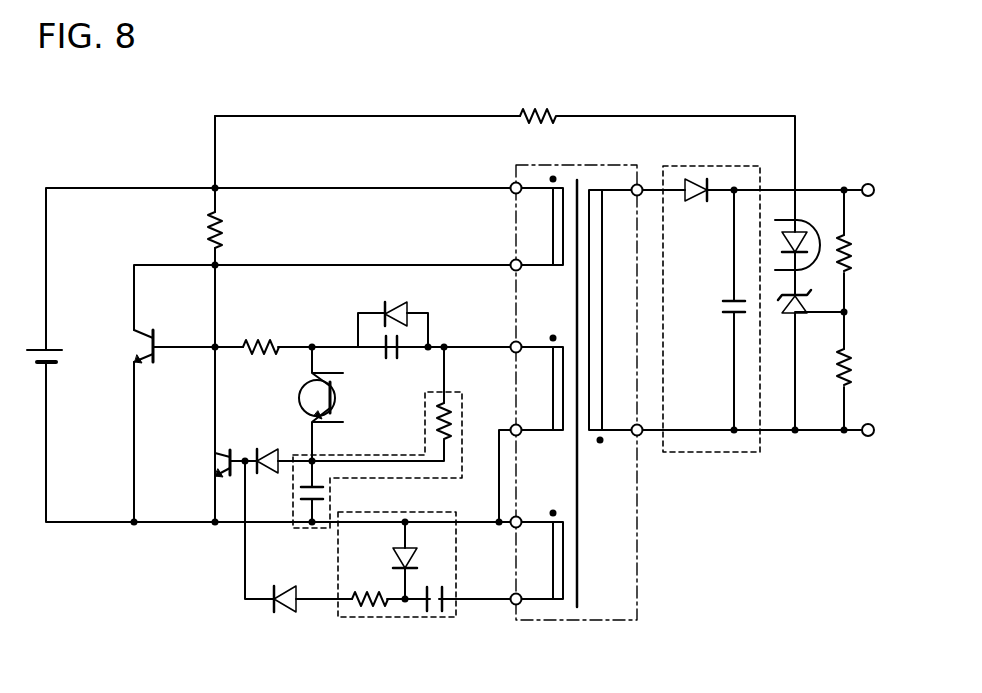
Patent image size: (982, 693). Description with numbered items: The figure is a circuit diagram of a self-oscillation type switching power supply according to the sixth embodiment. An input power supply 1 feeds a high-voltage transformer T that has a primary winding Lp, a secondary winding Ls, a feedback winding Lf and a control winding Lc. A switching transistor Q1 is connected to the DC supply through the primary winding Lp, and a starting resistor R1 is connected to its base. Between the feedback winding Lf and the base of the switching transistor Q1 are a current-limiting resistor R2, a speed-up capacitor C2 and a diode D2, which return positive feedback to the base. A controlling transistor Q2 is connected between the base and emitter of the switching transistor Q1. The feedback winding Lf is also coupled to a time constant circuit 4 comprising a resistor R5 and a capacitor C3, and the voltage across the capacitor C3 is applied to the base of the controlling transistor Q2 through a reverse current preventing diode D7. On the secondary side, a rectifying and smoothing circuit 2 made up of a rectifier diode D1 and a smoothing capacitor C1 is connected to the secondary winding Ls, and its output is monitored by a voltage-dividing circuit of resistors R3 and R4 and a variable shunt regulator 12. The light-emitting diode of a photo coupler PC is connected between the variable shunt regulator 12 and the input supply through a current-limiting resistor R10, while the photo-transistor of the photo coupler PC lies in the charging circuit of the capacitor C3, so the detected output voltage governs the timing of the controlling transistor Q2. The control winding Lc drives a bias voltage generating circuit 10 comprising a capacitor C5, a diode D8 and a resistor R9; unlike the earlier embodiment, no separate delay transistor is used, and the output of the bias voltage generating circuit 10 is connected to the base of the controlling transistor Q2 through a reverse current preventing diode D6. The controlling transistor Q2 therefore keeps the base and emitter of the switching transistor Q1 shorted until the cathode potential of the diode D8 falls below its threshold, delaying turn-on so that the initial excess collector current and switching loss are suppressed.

The input power supply 1 is at (58, 363).
The rectifying and smoothing circuit 2 is at (762, 166).
The time constant circuit 4 is at (374, 455).
The bias voltage generating circuit 10 is at (429, 512).
The variable shunt regulator 12 is at (788, 318).
The switching transistor Q1 is at (146, 346).
The controlling transistor Q2 is at (230, 450).
The starting resistor R1 is at (230, 230).
The current-limiting resistor R2 is at (261, 334).
The voltage-dividing resistor R3 is at (859, 253).
The voltage-dividing resistor R4 is at (859, 367).
The resistor R5 is at (427, 421).
The resistor R9 is at (370, 587).
The current-limiting resistor R10 is at (538, 104).
The smoothing capacitor C1 is at (721, 309).
The speed-up capacitor C2 is at (392, 359).
The capacitor C3 is at (326, 497).
The capacitor C5 is at (432, 589).
The rectifier diode D1 is at (700, 203).
The diode D2 is at (393, 312).
The reverse current preventing diode D6 is at (288, 586).
The reverse current preventing diode D7 is at (272, 451).
The diode D8 is at (391, 554).
The photo coupler PC is at (299, 398).
The high-voltage transformer T is at (577, 376).
The primary winding Lp is at (539, 221).
The secondary winding Ls is at (613, 317).
The feedback winding Lf is at (539, 383).
The control winding Lc is at (539, 555).